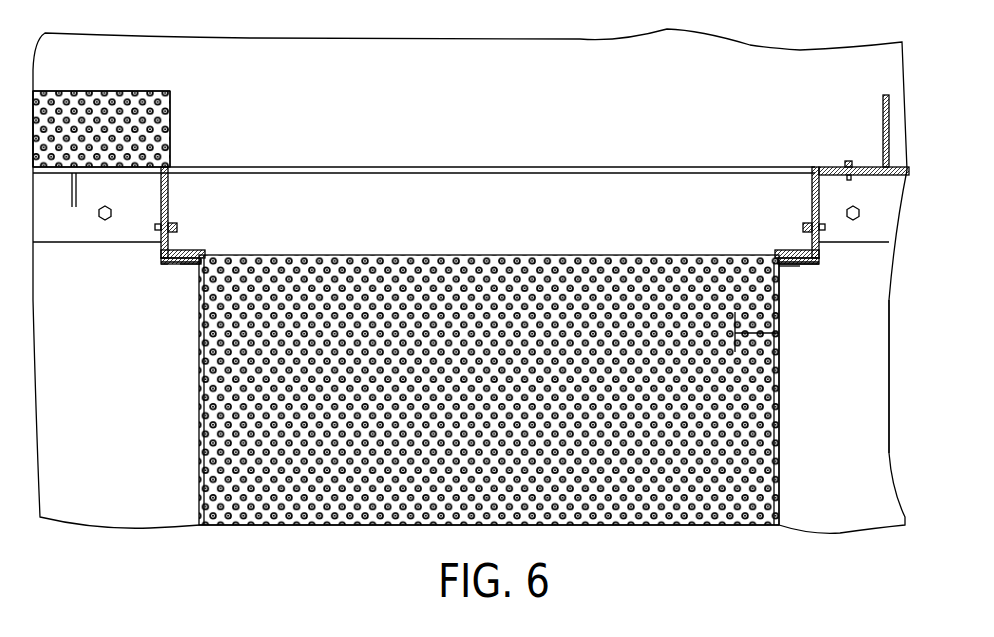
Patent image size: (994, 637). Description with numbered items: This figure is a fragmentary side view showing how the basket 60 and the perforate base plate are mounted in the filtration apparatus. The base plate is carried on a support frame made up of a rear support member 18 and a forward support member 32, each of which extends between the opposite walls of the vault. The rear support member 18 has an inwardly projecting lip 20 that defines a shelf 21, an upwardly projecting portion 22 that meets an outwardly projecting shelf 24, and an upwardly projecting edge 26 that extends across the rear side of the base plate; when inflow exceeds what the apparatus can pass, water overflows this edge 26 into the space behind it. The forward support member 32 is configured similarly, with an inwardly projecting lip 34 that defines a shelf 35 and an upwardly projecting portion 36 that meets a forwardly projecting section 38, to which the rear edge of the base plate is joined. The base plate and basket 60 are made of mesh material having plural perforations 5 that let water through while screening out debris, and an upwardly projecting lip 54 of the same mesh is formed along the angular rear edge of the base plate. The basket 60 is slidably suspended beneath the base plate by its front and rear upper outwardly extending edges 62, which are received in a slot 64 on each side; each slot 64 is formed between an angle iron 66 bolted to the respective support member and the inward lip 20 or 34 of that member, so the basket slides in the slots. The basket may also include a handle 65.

The perforations 5 is at (112, 116).
The forwardly projecting section 38 is at (92, 166).
The upwardly projecting lip 54 is at (143, 108).
The forward support member 32 is at (206, 163).
The rear support member 18 is at (836, 158).
The outwardly projecting shelf 24 is at (866, 166).
The upwardly projecting edge 26 is at (890, 128).
The upwardly projecting portion 22 is at (820, 190).
The angle iron 66 is at (177, 218).
The outwardly extending edges 62 is at (190, 250).
The slot 64 is at (160, 262).
The shelf 21 is at (803, 265).
The inwardly projecting lip 20 is at (790, 268).
The handle 65 is at (851, 376).
The basket 60 is at (786, 437).
The upwardly projecting portion 36 is at (160, 204).
The shelf 35 is at (163, 266).
The inwardly projecting lip 34 is at (185, 265).